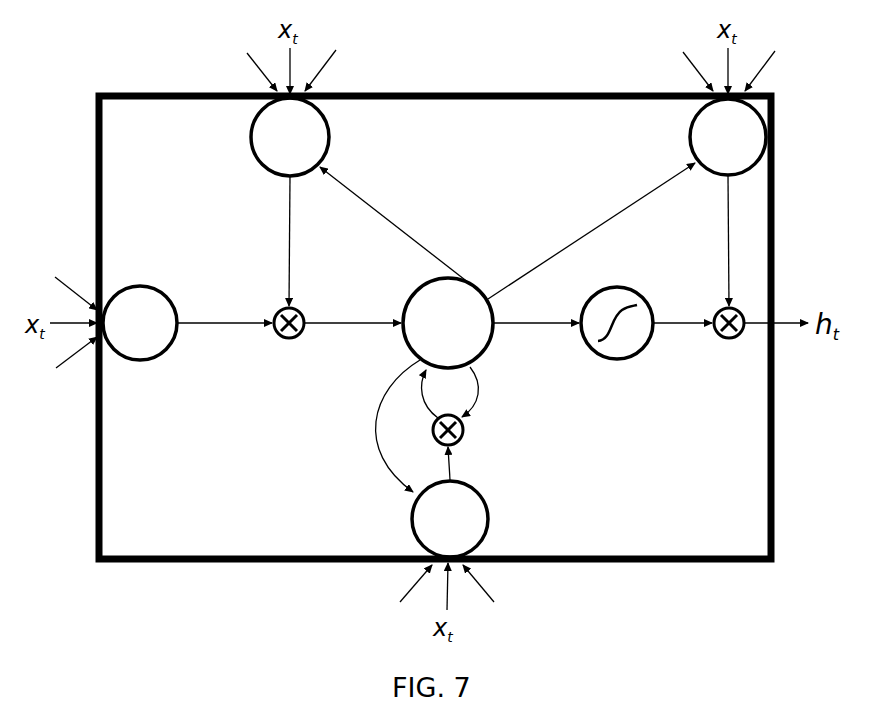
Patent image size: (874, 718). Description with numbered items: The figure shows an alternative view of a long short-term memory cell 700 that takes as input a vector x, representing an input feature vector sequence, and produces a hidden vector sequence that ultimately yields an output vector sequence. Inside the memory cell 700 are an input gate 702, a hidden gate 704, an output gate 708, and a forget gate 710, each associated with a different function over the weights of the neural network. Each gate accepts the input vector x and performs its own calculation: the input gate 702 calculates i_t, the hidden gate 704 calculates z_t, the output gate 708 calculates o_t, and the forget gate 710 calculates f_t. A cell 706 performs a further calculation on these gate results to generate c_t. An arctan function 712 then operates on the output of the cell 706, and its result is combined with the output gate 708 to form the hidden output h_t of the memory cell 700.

The LSTM memory cell 700 is at (728, 527).
The input gate 702 is at (251, 136).
The hidden gate 704 is at (136, 286).
The cell 706 is at (437, 278).
The output gate 708 is at (690, 137).
The forget gate 710 is at (412, 519).
The arctan function 712 is at (619, 360).